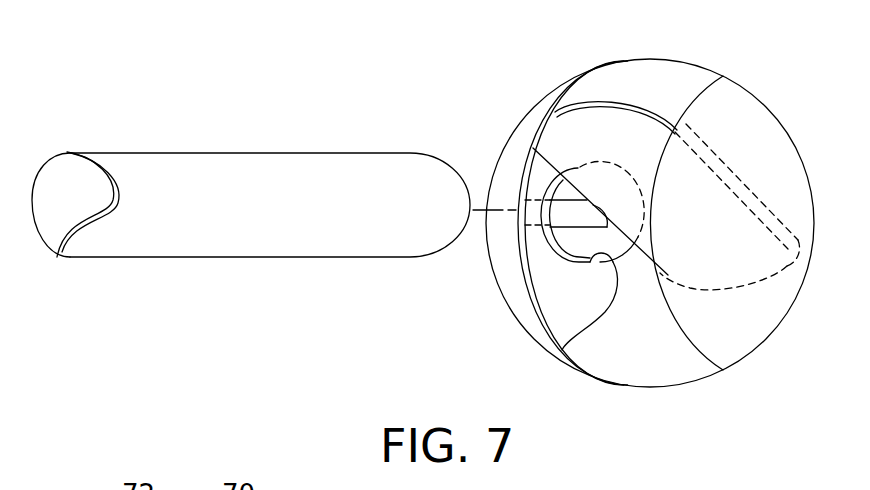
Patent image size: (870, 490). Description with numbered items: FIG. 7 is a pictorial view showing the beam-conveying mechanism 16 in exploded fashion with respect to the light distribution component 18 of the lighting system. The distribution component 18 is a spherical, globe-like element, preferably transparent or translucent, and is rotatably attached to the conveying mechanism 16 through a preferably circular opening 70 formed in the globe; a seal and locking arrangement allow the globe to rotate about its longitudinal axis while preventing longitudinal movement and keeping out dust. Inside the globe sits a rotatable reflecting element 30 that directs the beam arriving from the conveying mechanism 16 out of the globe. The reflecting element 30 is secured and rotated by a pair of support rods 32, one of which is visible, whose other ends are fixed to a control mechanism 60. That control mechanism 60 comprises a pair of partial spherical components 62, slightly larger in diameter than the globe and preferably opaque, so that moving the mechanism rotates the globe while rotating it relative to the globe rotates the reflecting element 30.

The conveying mechanism 16 is at (281, 152).
The light distribution component 18 is at (639, 341).
The reflecting element 30 is at (605, 133).
The support rod 32 is at (533, 230).
The control mechanism 60 is at (757, 151).
The partial spherical component 62 is at (509, 268).
The circular opening 70 is at (562, 350).